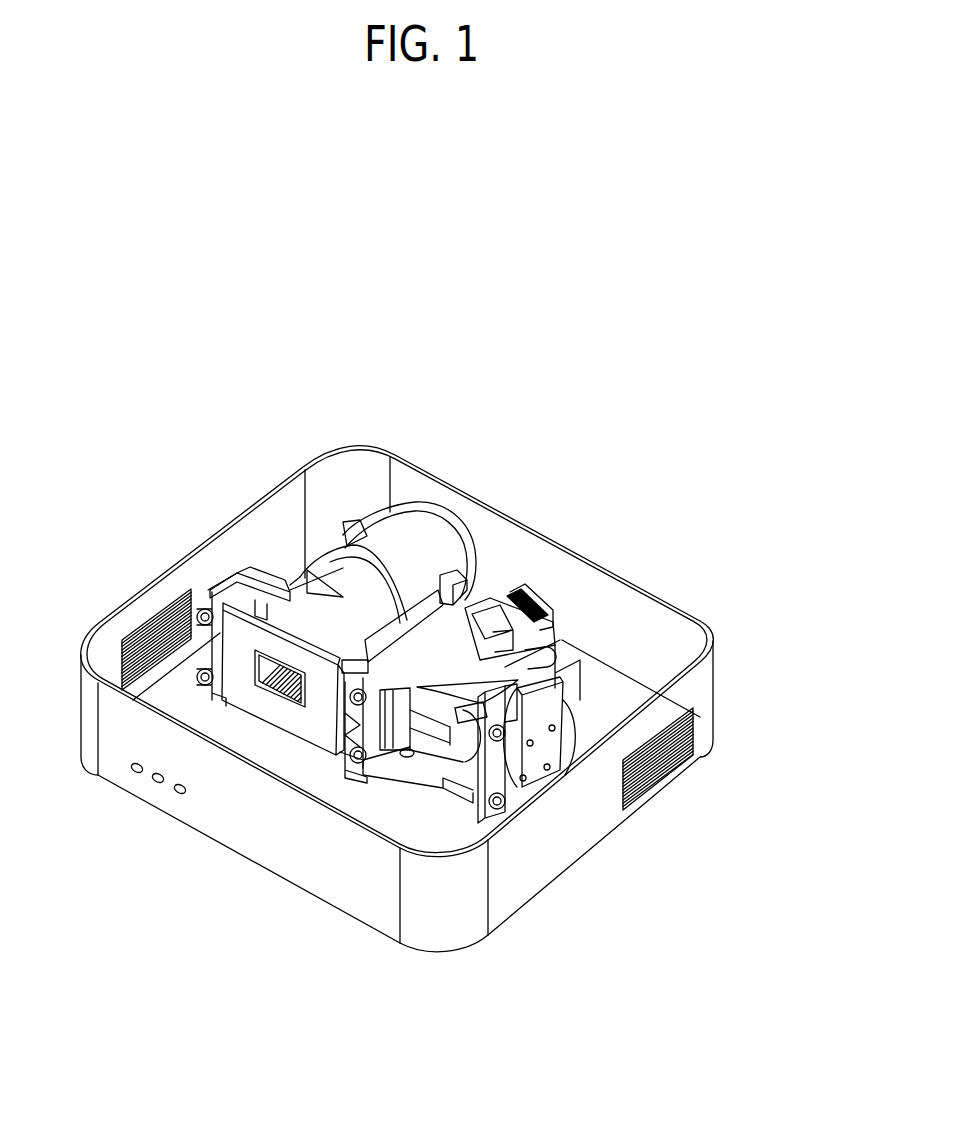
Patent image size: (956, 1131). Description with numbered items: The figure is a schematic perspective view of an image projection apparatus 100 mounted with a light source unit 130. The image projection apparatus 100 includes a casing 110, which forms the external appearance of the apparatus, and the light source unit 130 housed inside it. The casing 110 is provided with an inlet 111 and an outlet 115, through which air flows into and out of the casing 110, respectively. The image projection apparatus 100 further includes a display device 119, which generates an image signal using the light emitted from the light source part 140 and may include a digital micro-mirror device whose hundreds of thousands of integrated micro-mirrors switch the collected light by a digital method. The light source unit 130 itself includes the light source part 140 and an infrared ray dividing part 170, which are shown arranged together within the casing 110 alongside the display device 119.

The image projection apparatus 100 is at (654, 516).
The casing 110 is at (280, 483).
The inlet 111 is at (143, 618).
The outlet 115 is at (661, 780).
The display device 119 is at (205, 608).
The light source unit 130 is at (493, 627).
The light source part 140 is at (558, 655).
The infrared ray dividing part 170 is at (560, 687).